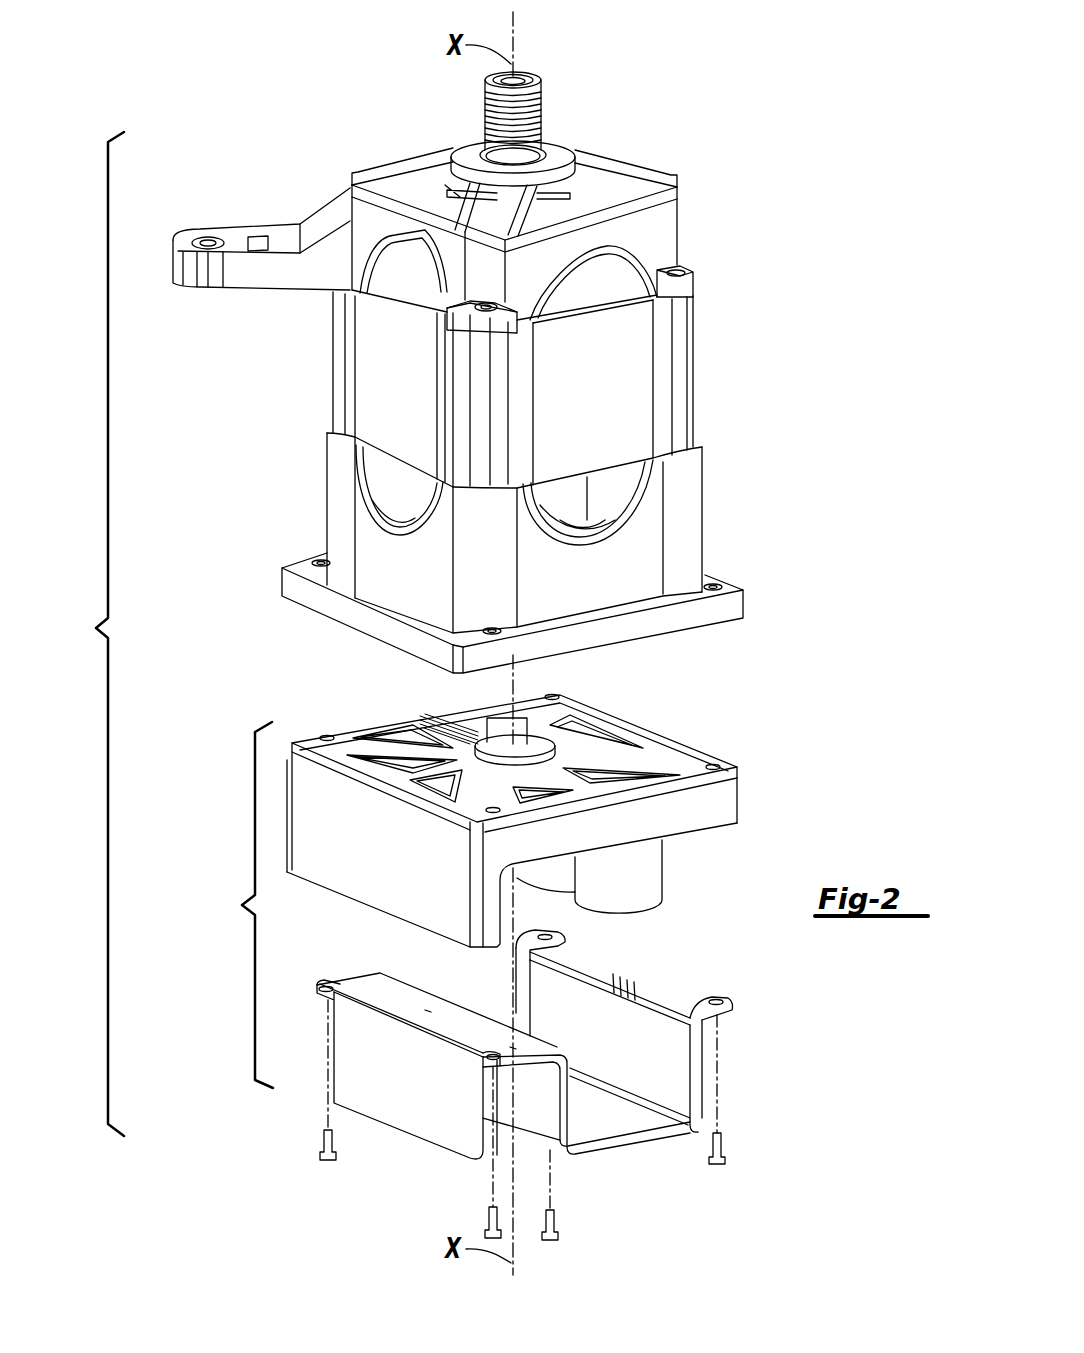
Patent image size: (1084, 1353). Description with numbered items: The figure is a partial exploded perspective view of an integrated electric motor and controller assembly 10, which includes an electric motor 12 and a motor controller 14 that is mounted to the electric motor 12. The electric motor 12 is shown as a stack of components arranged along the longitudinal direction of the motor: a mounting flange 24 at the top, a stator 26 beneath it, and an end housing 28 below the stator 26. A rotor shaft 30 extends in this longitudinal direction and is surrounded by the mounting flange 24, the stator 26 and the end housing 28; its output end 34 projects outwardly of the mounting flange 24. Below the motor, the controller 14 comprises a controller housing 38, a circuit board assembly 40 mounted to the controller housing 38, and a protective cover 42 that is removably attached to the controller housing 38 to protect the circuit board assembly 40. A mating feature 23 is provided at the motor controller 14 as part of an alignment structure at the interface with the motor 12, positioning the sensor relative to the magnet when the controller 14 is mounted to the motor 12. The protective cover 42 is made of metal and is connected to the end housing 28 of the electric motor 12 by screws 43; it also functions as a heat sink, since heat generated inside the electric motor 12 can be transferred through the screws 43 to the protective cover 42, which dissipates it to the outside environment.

The integrated electric motor and controller assembly 10 is at (95, 634).
The electric motor 12 is at (276, 389).
The motor controller 14 is at (222, 906).
The mating feature 23 is at (474, 705).
The mounting flange 24 is at (677, 230).
The stator 26 is at (692, 367).
The end housing 28 is at (703, 518).
The rotor shaft 30 is at (568, 50).
The output end 34 is at (487, 114).
The controller housing 38 is at (559, 807).
The circuit board assembly 40 is at (680, 864).
The protective cover 42 is at (710, 1072).
The screws 43 is at (321, 1148).